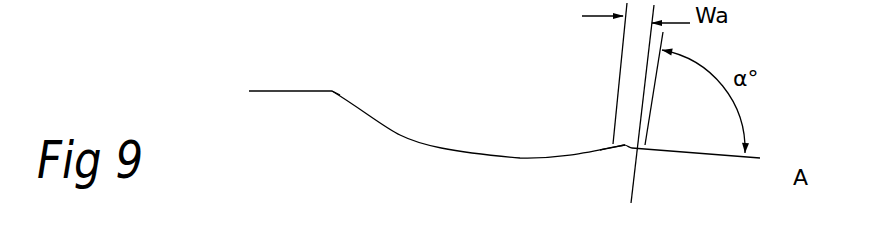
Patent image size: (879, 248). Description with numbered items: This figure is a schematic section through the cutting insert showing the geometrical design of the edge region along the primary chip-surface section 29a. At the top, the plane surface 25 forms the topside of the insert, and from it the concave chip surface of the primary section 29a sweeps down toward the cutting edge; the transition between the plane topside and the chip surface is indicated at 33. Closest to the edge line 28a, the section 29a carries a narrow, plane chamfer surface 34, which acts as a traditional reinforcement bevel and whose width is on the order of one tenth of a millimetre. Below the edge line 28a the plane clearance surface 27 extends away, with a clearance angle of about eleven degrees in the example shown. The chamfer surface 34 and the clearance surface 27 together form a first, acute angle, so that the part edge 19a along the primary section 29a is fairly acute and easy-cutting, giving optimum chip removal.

The plane surface 25 is at (272, 91).
The transition edge 33 is at (331, 91).
The primary surface section 29a is at (497, 155).
The chamfer surface 34 is at (626, 145).
The edge line 28a is at (641, 143).
The part edge 19a is at (628, 159).
The clearance surface 27 is at (637, 178).